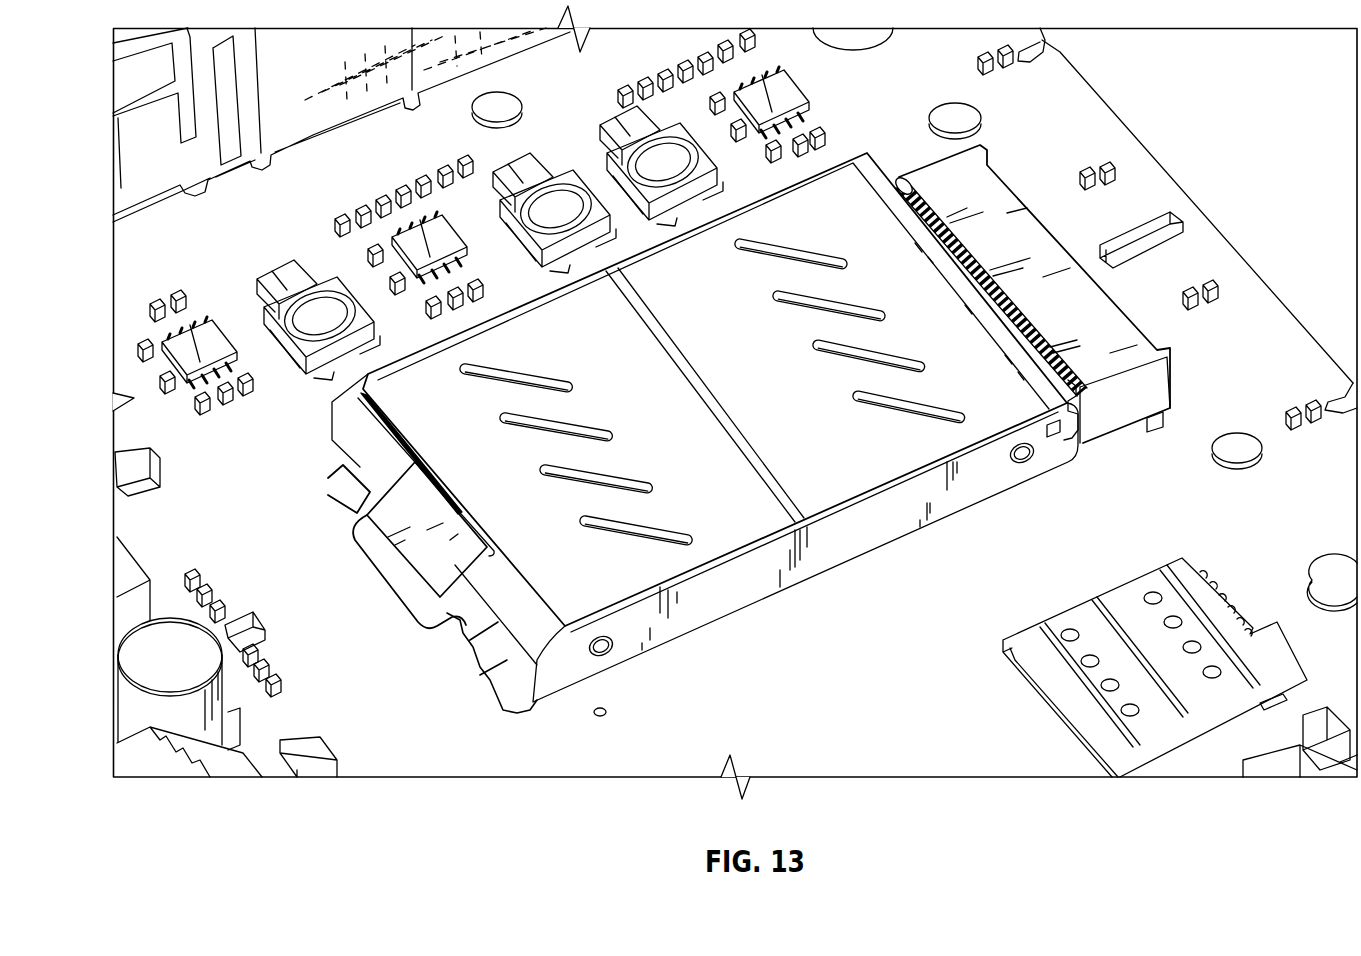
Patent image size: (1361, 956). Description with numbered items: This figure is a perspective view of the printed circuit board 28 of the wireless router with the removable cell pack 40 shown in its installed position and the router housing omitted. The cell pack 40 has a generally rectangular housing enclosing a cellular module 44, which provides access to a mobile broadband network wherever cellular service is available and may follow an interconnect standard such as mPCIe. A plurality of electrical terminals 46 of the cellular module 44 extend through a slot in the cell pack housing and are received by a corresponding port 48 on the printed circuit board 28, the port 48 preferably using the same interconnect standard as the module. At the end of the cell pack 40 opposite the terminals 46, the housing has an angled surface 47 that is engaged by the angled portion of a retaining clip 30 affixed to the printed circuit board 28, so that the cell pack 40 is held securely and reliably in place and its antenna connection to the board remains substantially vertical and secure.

The printed circuit board 28 is at (840, 699).
The retaining clip 30 is at (385, 522).
The removable cell pack 40 is at (766, 240).
The cellular module 44 is at (912, 184).
The electrical terminals 46 is at (1043, 338).
The angled surface 47 is at (520, 610).
The port 48 is at (1002, 207).